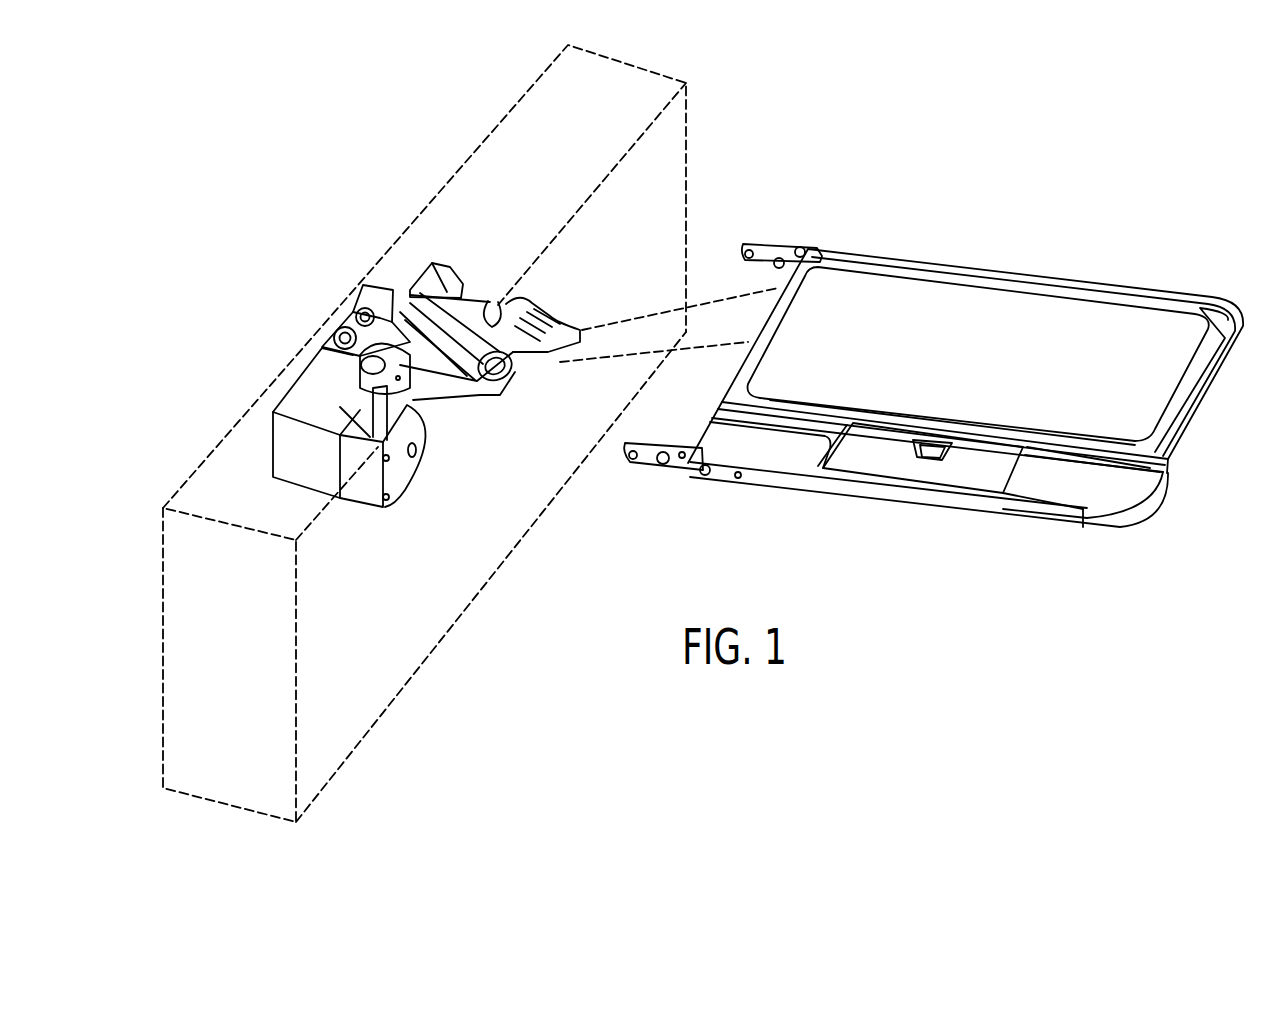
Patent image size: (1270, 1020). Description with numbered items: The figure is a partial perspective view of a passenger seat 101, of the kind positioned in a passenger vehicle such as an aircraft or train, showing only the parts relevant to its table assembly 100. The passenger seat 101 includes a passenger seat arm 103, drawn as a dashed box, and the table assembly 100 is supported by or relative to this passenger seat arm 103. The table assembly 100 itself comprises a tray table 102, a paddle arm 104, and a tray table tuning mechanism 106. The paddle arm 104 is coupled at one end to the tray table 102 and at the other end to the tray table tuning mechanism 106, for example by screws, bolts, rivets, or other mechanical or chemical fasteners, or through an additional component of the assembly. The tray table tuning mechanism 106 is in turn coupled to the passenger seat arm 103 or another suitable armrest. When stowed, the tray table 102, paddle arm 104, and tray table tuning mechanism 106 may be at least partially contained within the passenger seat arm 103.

The table assembly 100 is at (312, 236).
The passenger seat 101 is at (205, 318).
The tray table 102 is at (960, 320).
The passenger seat arm 103 is at (675, 152).
The paddle arm 104 is at (500, 397).
The tray table tuning mechanism 106 is at (437, 492).